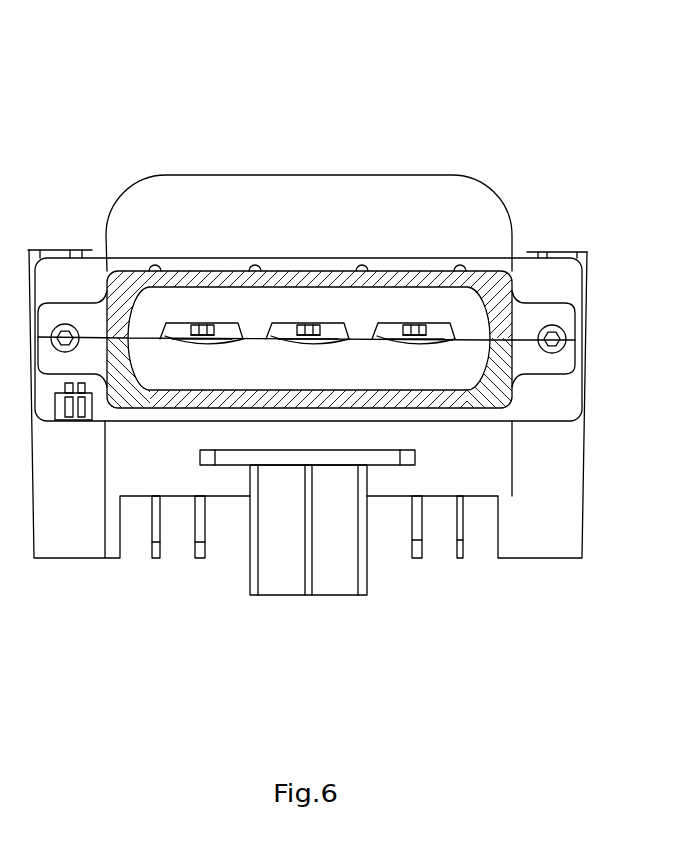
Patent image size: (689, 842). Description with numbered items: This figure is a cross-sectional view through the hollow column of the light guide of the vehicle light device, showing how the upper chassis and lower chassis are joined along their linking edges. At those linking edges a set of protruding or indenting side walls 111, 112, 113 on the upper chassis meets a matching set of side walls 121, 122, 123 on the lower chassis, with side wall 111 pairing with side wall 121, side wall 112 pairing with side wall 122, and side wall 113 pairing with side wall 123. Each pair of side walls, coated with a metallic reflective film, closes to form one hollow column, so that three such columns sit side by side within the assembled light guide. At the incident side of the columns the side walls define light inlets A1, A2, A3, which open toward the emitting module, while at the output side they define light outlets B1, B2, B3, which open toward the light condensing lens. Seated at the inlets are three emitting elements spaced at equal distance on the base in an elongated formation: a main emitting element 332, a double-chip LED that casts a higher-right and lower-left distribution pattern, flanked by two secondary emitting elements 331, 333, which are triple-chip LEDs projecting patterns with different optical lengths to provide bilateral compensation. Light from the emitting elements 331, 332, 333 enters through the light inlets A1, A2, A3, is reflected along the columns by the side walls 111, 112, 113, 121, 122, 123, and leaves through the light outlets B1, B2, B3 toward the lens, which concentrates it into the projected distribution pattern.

The light inlet A1 is at (190, 329).
The light inlet A2 is at (312, 333).
The light inlet A3 is at (420, 333).
The light outlet B1 is at (227, 342).
The light outlet B2 is at (330, 342).
The light outlet B3 is at (440, 342).
The side wall 111 is at (445, 325).
The side wall 112 is at (337, 322).
The side wall 113 is at (228, 325).
The side wall 121 is at (421, 334).
The side wall 122 is at (332, 340).
The side wall 123 is at (215, 338).
The secondary emitting element 331 is at (193, 326).
The main emitting element 332 is at (304, 325).
The secondary emitting element 333 is at (413, 326).